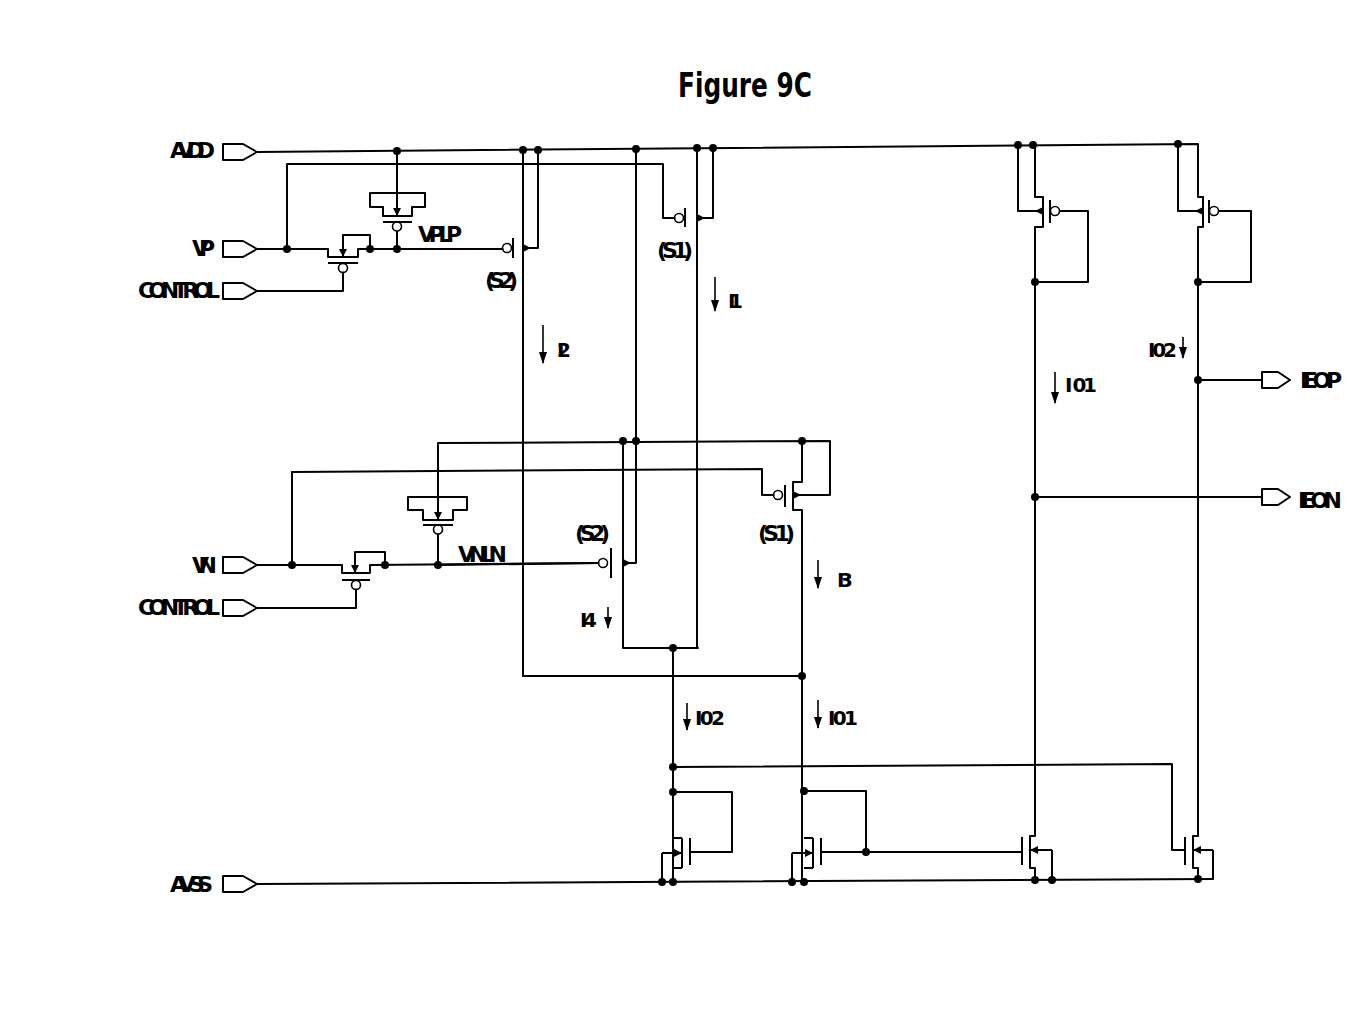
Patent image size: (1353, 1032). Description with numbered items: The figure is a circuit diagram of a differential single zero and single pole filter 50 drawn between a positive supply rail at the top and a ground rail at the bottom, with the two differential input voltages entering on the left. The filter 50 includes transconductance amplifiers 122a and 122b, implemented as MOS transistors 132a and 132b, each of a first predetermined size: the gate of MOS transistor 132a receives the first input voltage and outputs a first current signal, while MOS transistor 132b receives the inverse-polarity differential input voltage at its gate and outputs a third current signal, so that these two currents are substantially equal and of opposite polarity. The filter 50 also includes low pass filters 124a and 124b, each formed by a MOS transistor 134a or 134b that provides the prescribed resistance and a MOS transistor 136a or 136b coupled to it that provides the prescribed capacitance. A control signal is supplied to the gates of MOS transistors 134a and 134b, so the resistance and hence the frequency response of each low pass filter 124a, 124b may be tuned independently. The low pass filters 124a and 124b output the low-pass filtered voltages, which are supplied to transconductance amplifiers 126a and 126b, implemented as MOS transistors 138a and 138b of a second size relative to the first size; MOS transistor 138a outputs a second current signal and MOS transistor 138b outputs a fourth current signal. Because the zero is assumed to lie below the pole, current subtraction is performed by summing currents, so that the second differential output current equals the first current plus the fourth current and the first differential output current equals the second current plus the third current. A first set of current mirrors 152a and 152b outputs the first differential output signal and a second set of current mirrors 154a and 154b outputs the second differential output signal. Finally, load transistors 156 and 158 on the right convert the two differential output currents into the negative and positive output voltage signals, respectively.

The differential single zero and single pole filter 50 is at (1078, 100).
The transconductance amplifier 122a is at (727, 190).
The transconductance amplifier 122b is at (822, 420).
The low pass filter 124a is at (445, 270).
The low pass filter 124b is at (448, 598).
The transconductance amplifier 126a is at (552, 227).
The transconductance amplifier 126b is at (645, 550).
The MOS transistor 132a is at (707, 227).
The MOS transistor 132b is at (825, 505).
The MOS transistor 134a is at (363, 277).
The MOS transistor 134b is at (370, 593).
The MOS transistor 136a is at (382, 183).
The MOS transistor 136b is at (417, 492).
The MOS transistor 138a is at (537, 257).
The MOS transistor 138b is at (630, 573).
The current mirror 152a is at (878, 825).
The current mirror 152b is at (1065, 838).
The current mirror 154a is at (652, 846).
The current mirror 154b is at (1220, 842).
The load transistor 156 is at (1100, 237).
The load transistor 158 is at (1252, 202).